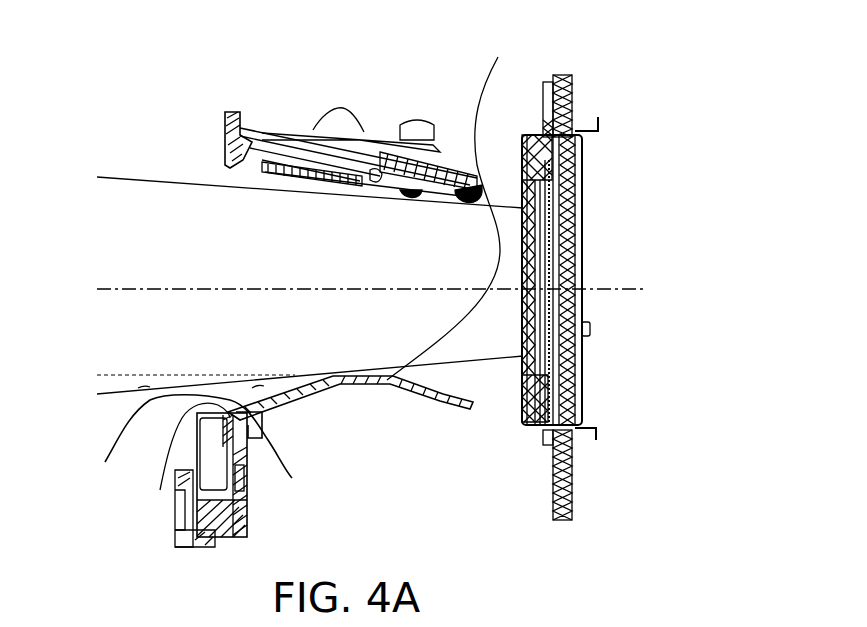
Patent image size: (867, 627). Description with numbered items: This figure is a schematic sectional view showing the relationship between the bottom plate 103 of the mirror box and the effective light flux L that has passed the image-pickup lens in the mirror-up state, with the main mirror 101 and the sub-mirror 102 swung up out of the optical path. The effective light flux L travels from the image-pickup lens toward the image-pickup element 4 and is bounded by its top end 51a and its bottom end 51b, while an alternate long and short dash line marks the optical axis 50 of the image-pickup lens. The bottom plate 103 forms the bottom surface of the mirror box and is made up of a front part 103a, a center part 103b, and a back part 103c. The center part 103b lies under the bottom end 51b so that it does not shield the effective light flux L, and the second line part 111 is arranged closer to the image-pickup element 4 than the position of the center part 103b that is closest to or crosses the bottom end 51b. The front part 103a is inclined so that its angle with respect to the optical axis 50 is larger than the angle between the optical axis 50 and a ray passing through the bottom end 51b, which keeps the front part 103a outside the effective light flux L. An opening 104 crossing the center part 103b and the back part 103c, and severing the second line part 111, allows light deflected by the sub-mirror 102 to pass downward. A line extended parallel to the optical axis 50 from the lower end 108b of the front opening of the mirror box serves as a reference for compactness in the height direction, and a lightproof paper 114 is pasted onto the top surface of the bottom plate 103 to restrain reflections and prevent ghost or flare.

The image-pickup element 4 is at (581, 198).
The optical axis 50 is at (607, 287).
The top end of the effective light flux 51a is at (135, 178).
The bottom end of the effective light flux 51b is at (98, 396).
The effective light flux L is at (143, 238).
The main mirror 101 is at (310, 130).
The sub-mirror 102 is at (334, 100).
The bottom plate 103 is at (186, 466).
The front part 103a is at (262, 414).
The center part 103b is at (363, 388).
The back part 103c is at (453, 404).
The opening 104 is at (400, 393).
The lower end of the front surface opening 108b is at (160, 490).
The second line part 111 is at (466, 205).
The lightproof paper 114 is at (252, 433).